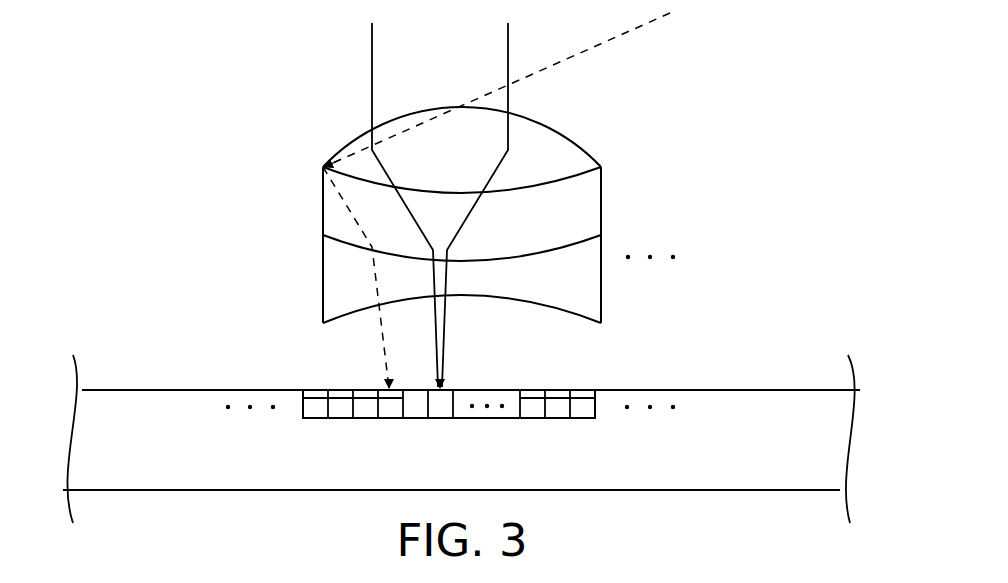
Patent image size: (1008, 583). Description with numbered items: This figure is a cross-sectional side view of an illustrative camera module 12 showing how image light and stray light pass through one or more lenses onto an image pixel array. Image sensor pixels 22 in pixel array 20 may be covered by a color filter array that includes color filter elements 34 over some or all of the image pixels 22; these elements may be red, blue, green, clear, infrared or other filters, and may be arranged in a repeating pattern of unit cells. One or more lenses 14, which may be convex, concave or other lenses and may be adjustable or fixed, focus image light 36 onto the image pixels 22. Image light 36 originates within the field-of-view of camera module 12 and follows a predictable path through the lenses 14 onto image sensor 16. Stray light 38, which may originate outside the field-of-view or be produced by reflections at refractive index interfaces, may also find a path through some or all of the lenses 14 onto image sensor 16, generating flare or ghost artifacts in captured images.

The camera module 12 is at (443, 211).
The lenses 14 is at (550, 140).
The image sensor 16 is at (185, 402).
The pixel array 20 is at (457, 419).
The image pixels 22 is at (457, 402).
The color filter elements 34 is at (362, 393).
The image light 36 is at (370, 38).
The stray light 38 is at (618, 35).